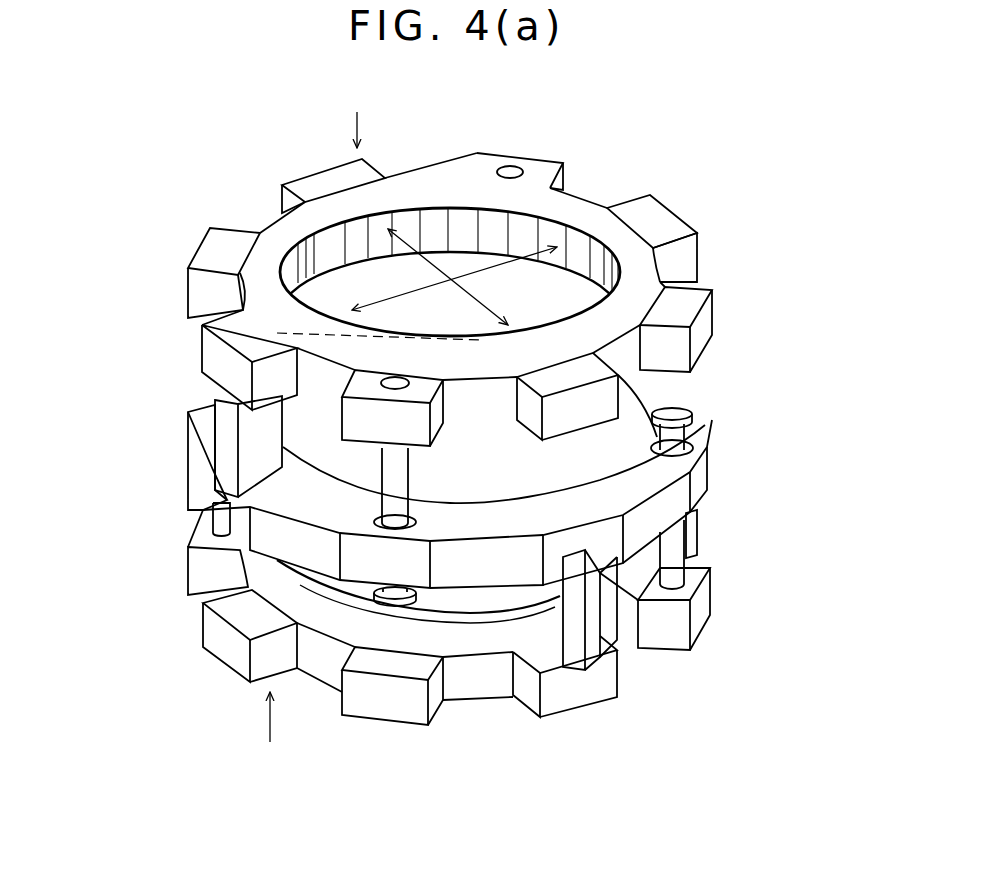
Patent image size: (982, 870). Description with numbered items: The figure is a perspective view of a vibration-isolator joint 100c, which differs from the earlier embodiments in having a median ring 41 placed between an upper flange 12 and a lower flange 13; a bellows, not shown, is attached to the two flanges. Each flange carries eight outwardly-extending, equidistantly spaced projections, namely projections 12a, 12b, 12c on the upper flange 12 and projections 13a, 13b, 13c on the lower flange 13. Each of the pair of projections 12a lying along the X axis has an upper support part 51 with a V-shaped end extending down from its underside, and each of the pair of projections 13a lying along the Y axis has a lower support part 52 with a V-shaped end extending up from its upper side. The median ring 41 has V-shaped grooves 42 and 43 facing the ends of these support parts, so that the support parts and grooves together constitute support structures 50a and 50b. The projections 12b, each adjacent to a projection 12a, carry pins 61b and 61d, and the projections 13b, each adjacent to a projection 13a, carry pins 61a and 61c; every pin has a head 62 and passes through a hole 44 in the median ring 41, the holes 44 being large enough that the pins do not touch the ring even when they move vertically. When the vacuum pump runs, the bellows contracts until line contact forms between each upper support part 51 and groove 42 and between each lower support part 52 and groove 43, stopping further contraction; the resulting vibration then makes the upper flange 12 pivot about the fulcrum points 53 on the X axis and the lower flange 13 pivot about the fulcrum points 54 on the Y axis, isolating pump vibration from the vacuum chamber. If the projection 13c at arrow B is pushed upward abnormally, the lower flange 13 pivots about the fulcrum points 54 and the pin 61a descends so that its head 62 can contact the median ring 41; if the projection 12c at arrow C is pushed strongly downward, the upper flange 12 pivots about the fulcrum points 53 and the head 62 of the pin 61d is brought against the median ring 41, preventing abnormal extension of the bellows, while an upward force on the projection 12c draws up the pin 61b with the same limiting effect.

The joint 100c is at (473, 143).
The upper flange 12 is at (580, 210).
The projection 12a is at (213, 350).
The projection 12b is at (543, 170).
The projection 12c is at (333, 187).
The lower flange 13 is at (477, 685).
The projection 13a is at (590, 692).
The projection 13b is at (200, 573).
The projection 13c is at (227, 650).
The median ring 41 is at (510, 503).
The V-shaped groove 42 is at (253, 513).
The V-shaped groove 43 is at (547, 562).
The hole 44 is at (417, 503).
The support structure 50a is at (110, 403).
The support structure 50b is at (768, 668).
The upper support part 51 is at (230, 432).
The lower support part 52 is at (582, 595).
The upper support part fulcrum point 53 is at (203, 497).
The lower support part fulcrum point 54 is at (582, 540).
The pin 61a is at (675, 545).
The pin 61b is at (513, 170).
The pin 61c is at (205, 523).
The pin 61d is at (390, 470).
The head 62 is at (677, 413).